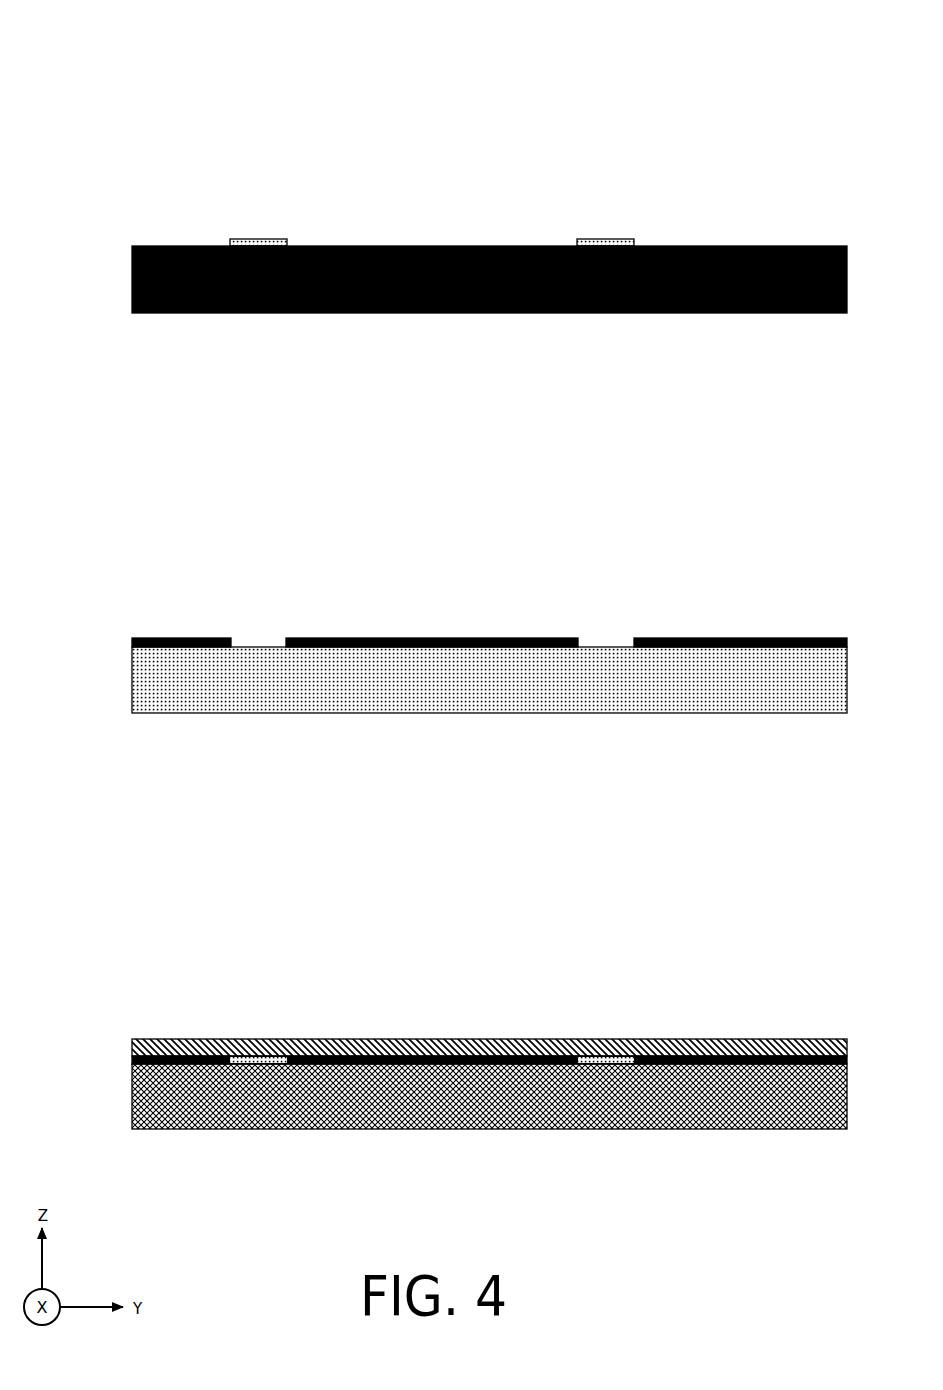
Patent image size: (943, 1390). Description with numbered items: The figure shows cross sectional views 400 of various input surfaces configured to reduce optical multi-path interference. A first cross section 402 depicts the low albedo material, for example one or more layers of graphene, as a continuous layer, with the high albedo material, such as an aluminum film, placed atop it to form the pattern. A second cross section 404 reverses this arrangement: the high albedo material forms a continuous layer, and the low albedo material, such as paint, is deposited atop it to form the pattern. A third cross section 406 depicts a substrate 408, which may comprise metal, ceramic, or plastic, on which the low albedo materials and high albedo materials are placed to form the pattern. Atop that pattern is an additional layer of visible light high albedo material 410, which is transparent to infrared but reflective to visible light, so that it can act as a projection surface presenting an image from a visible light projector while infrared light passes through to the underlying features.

The cross sectional views 400 is at (700, 62).
The first cross section 402 is at (165, 158).
The second cross section 404 is at (165, 482).
The third cross section 406 is at (165, 895).
The visible light high albedo material 410 is at (416, 1040).
The substrate 408 is at (588, 1128).